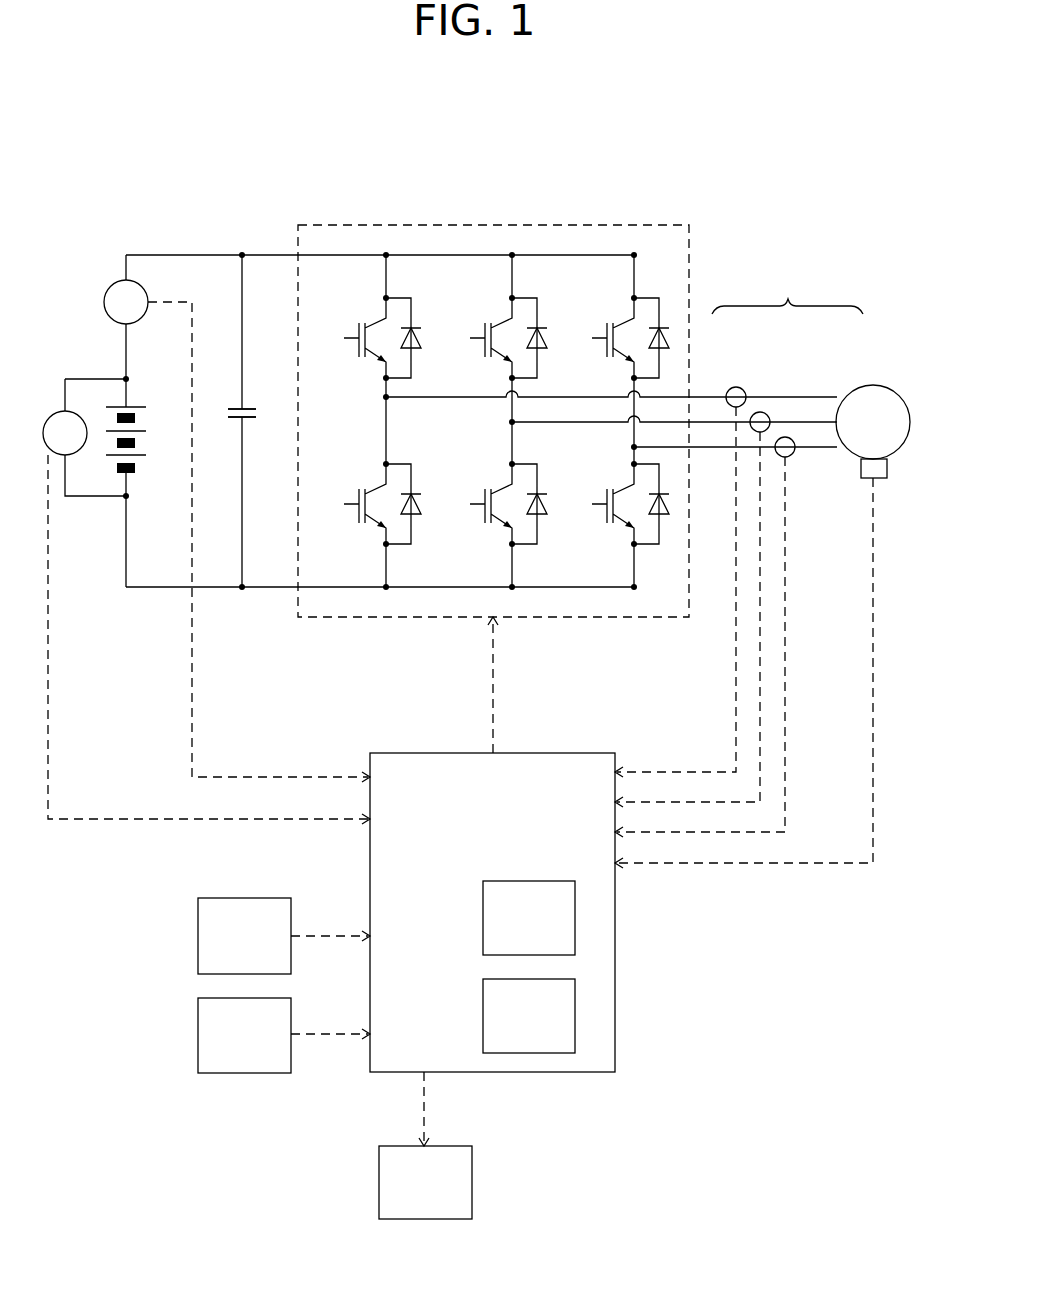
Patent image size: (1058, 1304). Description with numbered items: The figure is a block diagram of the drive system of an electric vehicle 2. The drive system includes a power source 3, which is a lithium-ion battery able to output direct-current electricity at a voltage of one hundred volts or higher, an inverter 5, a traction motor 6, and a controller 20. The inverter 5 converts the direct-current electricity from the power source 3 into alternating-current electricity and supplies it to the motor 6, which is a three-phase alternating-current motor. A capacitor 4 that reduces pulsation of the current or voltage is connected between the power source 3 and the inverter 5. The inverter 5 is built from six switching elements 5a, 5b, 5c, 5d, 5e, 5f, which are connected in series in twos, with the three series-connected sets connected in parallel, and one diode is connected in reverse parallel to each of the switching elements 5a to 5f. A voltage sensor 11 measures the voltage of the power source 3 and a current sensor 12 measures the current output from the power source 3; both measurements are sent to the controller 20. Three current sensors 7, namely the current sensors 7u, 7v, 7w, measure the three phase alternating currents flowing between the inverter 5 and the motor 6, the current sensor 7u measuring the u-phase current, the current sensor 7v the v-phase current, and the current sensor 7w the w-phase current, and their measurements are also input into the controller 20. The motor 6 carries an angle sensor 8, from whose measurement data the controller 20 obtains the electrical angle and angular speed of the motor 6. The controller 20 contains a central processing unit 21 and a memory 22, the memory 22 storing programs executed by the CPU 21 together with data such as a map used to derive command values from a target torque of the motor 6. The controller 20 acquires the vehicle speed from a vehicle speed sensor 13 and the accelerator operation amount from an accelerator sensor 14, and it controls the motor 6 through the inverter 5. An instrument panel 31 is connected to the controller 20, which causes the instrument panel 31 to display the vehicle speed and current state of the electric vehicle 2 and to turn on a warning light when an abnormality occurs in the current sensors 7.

The electric vehicle 2 is at (128, 180).
The power source 3 is at (136, 405).
The capacitor 4 is at (250, 410).
The inverter 5 is at (556, 222).
The switching element 5a is at (356, 330).
The switching element 5b is at (356, 496).
The switching element 5c is at (482, 330).
The switching element 5d is at (482, 496).
The switching element 5e is at (604, 330).
The switching element 5f is at (604, 496).
The traction motor 6 is at (898, 391).
The current sensors 7 is at (790, 300).
The current sensor 7u is at (736, 387).
The current sensor 7v is at (762, 412).
The current sensor 7w is at (787, 437).
The angle sensor 8 is at (866, 480).
The voltage sensor 11 is at (50, 418).
The current sensor 12 is at (110, 286).
The vehicle speed sensor 13 is at (198, 936).
The accelerator sensor 14 is at (198, 1034).
The controller 20 is at (565, 752).
The central processing unit 21 is at (575, 918).
The memory 22 is at (575, 1017).
The instrument panel 31 is at (379, 1180).